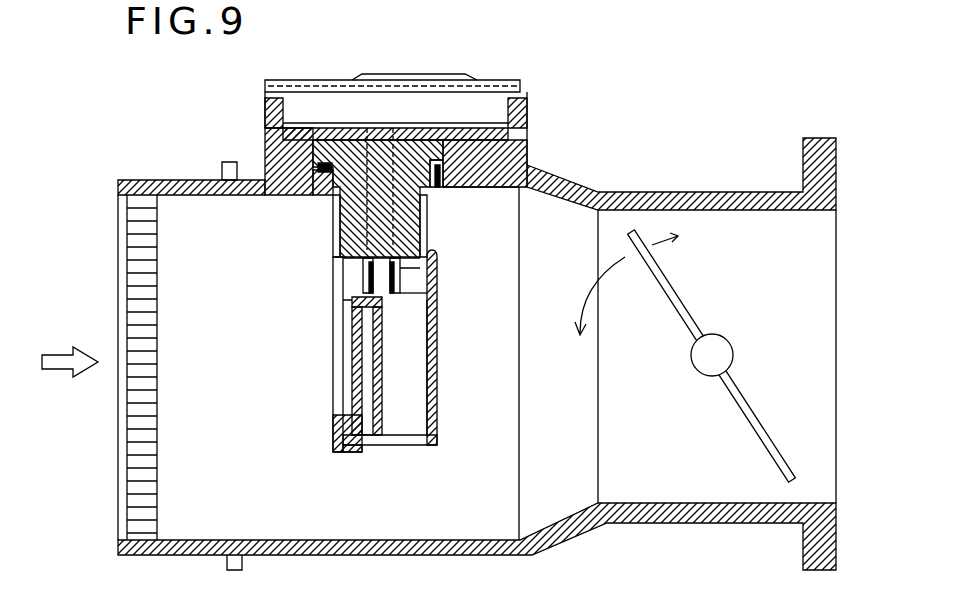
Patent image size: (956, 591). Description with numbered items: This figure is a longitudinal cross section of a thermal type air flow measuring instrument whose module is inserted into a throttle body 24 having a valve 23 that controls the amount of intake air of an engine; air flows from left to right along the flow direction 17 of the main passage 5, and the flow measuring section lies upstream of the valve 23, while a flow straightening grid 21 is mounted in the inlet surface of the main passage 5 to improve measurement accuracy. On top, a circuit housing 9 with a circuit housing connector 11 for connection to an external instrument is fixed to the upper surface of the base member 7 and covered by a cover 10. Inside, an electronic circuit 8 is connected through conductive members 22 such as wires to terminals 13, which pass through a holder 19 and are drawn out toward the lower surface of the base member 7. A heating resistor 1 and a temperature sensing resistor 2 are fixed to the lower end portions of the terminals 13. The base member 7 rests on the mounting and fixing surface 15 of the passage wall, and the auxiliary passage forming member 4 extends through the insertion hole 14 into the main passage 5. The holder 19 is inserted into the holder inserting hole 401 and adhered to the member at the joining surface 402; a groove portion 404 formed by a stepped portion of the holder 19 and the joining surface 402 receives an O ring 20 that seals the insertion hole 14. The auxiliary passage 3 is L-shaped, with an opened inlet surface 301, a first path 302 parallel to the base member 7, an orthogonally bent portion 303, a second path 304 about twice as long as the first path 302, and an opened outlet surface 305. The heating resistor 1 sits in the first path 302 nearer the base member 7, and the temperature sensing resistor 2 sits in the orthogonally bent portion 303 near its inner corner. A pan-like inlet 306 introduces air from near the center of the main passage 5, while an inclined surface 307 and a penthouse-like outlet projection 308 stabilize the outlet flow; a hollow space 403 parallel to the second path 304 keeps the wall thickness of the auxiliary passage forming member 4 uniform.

The heating resistor 1 is at (353, 273).
The temperature sensing resistor 2 is at (407, 288).
The auxiliary passage 3 is at (410, 393).
The auxiliary passage forming member 4 is at (432, 425).
The main passage 5 is at (175, 225).
The base member 7 is at (528, 137).
The electronic circuit 8 is at (470, 117).
The circuit housing 9 is at (527, 113).
The cover 10 is at (272, 88).
The circuit housing connector 11 is at (447, 78).
The terminals 13 is at (342, 330).
The insertion hole 14 is at (318, 192).
The mounting and fixing surface 15 is at (263, 137).
The flow direction 17 is at (55, 370).
The holder 19 is at (410, 222).
The O ring 20 is at (445, 148).
The flow straightening grid 21 is at (120, 492).
The conductive members 22 is at (313, 120).
The valve 23 is at (763, 443).
The throttle body 24 is at (712, 192).
The opened inlet surface 301 is at (350, 300).
The first path 302 is at (352, 290).
The orthogonally bent portion 303 is at (410, 278).
The second path 304 is at (412, 338).
The opened outlet surface 305 is at (423, 445).
The pan-like inlet 306 is at (345, 393).
The inclined surface 307 is at (337, 443).
The penthouse-like outlet projection 308 is at (367, 452).
The holder inserting hole 401 is at (335, 250).
The joining surface 402 is at (332, 163).
The hollow space 403 is at (368, 432).
The groove portion 404 is at (432, 165).